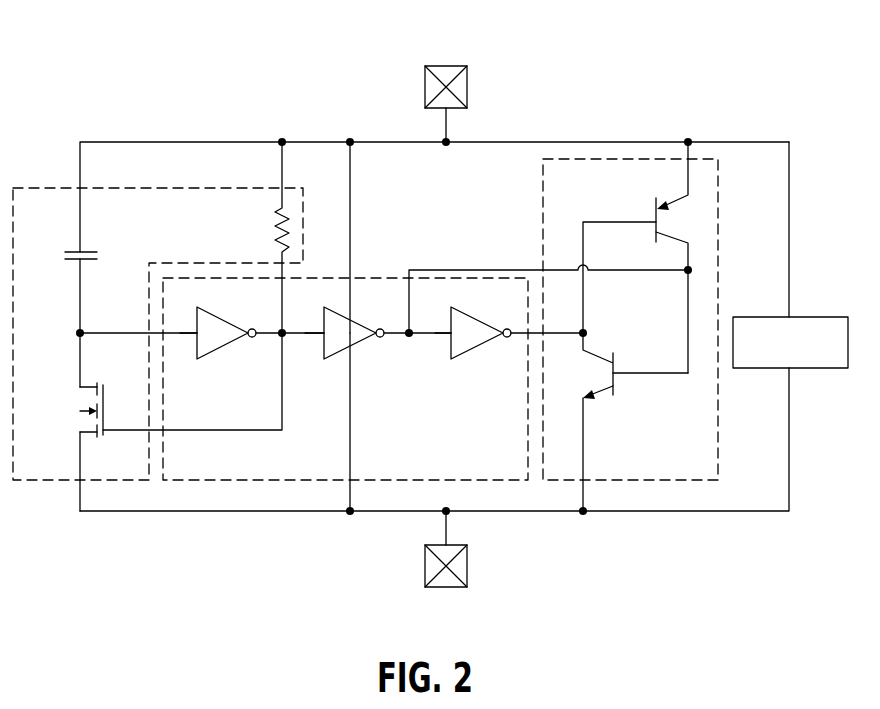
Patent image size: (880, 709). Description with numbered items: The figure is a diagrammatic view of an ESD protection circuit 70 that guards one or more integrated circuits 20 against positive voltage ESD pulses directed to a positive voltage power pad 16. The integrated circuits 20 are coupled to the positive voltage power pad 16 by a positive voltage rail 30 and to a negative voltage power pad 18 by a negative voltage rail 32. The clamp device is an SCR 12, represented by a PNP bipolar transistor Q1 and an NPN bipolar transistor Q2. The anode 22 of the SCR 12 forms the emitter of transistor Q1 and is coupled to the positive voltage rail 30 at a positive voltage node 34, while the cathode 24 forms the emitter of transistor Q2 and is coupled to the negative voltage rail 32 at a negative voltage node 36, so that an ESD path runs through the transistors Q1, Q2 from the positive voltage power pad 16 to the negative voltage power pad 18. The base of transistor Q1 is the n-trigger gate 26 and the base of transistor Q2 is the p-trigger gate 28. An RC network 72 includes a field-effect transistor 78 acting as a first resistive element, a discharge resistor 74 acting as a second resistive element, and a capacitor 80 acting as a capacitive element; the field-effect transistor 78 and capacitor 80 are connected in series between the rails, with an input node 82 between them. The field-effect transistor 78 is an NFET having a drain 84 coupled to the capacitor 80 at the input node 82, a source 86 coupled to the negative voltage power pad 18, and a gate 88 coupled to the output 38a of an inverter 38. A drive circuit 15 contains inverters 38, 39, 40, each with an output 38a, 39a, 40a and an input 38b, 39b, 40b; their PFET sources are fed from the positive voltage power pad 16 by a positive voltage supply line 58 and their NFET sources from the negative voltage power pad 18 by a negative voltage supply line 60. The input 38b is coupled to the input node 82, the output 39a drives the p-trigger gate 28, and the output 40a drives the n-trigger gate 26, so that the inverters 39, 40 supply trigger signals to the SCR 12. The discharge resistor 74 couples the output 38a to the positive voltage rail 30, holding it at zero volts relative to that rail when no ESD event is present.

The ESD protection circuit 70 is at (82, 80).
The RC network 72 is at (52, 188).
The discharge resistor 74 is at (275, 234).
The capacitor 80 is at (90, 251).
The input node 82 is at (78, 331).
The drain 84 is at (80, 354).
The source 86 is at (80, 444).
The gate 88 is at (103, 397).
The field-effect transistor 78 is at (70, 410).
The drive circuit 15 is at (388, 277).
The inverter 38 is at (222, 318).
The output of inverter 38 38a is at (254, 338).
The input of inverter 38 38b is at (197, 333).
The inverter 39 is at (352, 320).
The output of inverter 39 39a is at (381, 338).
The input of inverter 39 39b is at (324, 333).
The inverter 40 is at (480, 320).
The output of inverter 40 40a is at (508, 338).
The input of inverter 40 40b is at (451, 333).
The positive voltage supply line 58 is at (352, 197).
The negative voltage supply line 60 is at (352, 421).
The positive voltage power pad 16 is at (446, 66).
The negative voltage power pad 18 is at (447, 587).
The SCR 12 is at (720, 220).
The anode 22 is at (688, 185).
The n-trigger gate 26 is at (608, 222).
The p-trigger gate 28 is at (657, 373).
The cathode 24 is at (584, 461).
The positive voltage node 34 is at (688, 142).
The negative voltage node 36 is at (583, 512).
The positive voltage rail 30 is at (790, 238).
The negative voltage rail 32 is at (790, 442).
The integrated circuits 20 is at (752, 317).
The PNP bipolar transistor Q1 is at (656, 232).
The NPN bipolar transistor Q2 is at (614, 385).